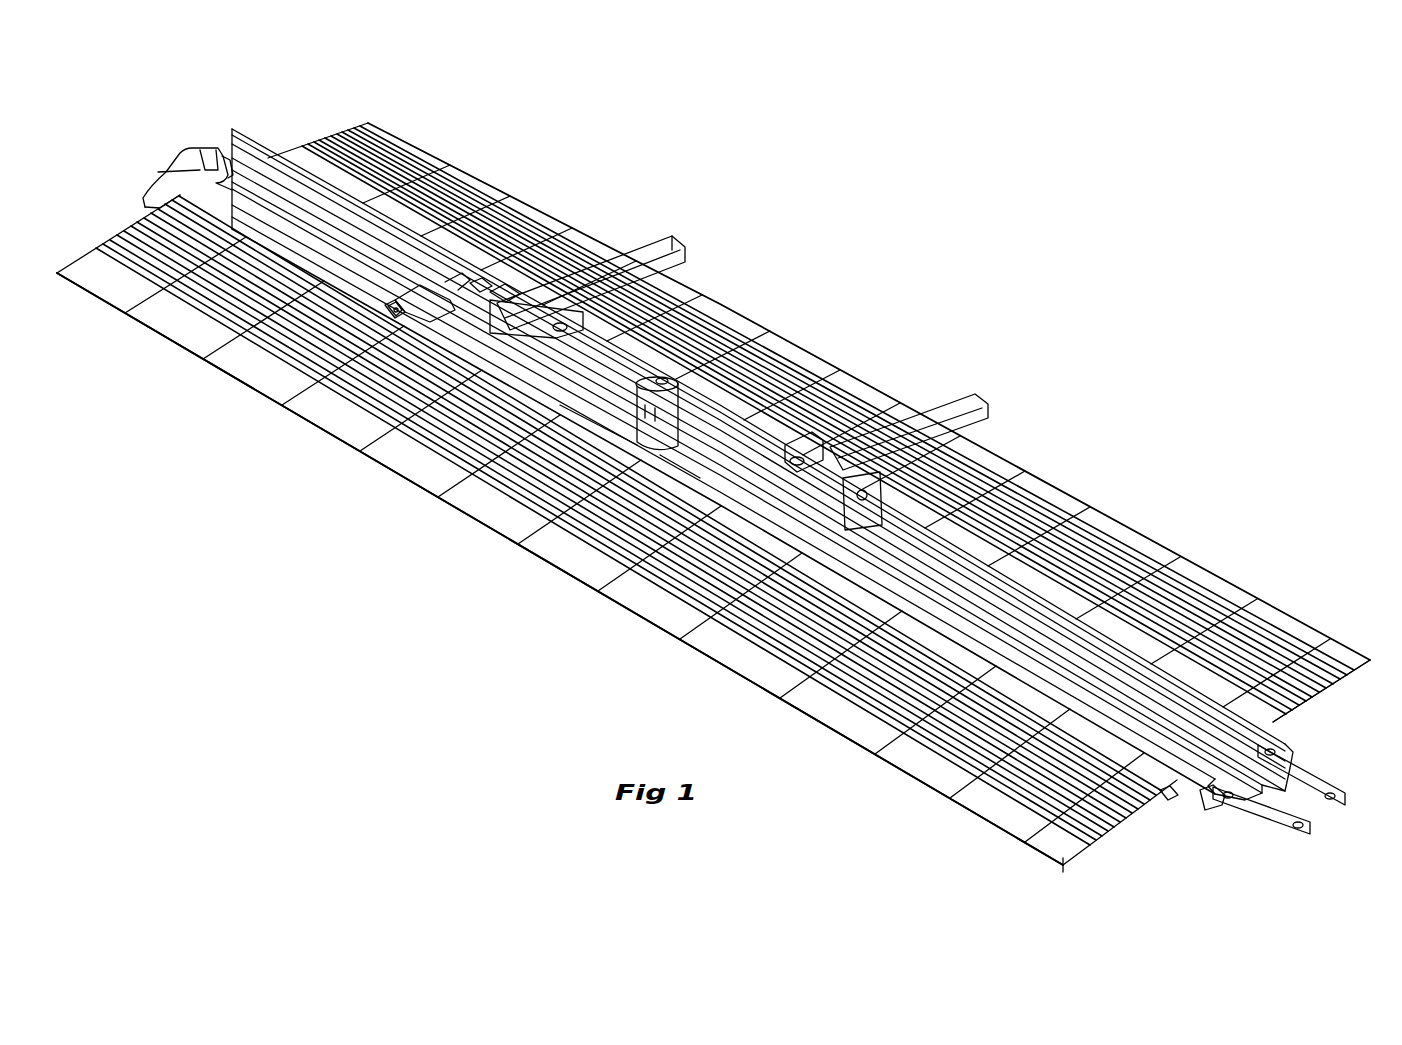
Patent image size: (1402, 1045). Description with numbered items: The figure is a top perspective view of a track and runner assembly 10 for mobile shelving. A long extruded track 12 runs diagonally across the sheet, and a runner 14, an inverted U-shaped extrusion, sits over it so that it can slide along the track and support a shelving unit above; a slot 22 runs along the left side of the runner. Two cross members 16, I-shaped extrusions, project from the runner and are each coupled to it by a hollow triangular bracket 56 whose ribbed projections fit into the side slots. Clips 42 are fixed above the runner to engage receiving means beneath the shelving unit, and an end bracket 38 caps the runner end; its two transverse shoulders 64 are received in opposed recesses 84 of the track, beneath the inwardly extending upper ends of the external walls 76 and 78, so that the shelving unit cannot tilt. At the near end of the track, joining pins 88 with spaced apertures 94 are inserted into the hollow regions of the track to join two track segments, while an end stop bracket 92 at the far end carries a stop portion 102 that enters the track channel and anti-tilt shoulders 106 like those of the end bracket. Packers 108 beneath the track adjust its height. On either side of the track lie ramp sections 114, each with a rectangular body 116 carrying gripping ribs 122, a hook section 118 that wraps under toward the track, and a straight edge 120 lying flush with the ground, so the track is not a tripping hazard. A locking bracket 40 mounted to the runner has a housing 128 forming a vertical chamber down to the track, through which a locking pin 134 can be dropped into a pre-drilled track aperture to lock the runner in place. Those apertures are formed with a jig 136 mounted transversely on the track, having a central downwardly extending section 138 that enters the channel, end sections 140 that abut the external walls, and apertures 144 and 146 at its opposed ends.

The track and runner assembly 10 is at (1022, 302).
The track 12 is at (1190, 693).
The runner 14 is at (728, 410).
The cross member 16 is at (655, 238).
The slot 22 is at (790, 500).
The end bracket 38 is at (963, 463).
The locking bracket 40 is at (668, 432).
The clip 42 is at (818, 435).
The bracket 56 is at (648, 278).
The shoulder 64 is at (880, 530).
The external wall 76 is at (285, 238).
The external wall 78 is at (352, 213).
The recess 84 is at (288, 203).
The joining pin 88 is at (1290, 818).
The end stop bracket 92 is at (180, 150).
The aperture 94 is at (1300, 826).
The stop portion 102 is at (208, 150).
The anti-tilt shoulder 106 is at (233, 155).
The packer 108 is at (1222, 812).
The ramp section 114 is at (1043, 490).
The body 116 is at (1305, 627).
The hook section 118 is at (1175, 800).
The straight edge 120 is at (1022, 862).
The rib 122 is at (1133, 557).
The housing 128 is at (680, 452).
The locking pin 134 is at (590, 420).
The jig 136 is at (418, 277).
The downwardly extending section 138 is at (457, 272).
The downwardly extending section 140 is at (500, 268).
The aperture 144 is at (478, 287).
The aperture 146 is at (392, 322).